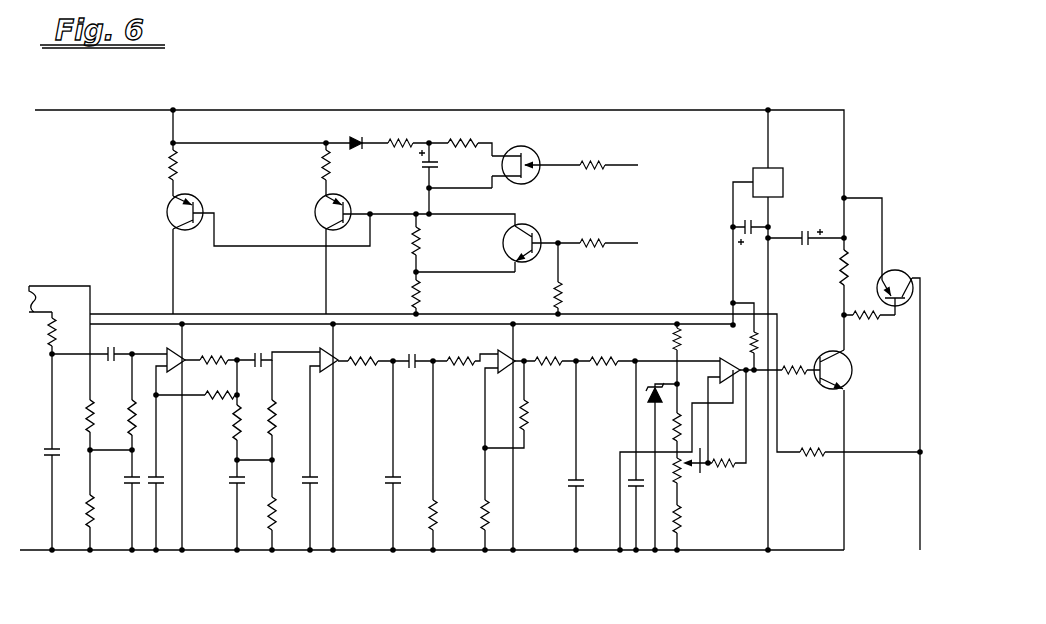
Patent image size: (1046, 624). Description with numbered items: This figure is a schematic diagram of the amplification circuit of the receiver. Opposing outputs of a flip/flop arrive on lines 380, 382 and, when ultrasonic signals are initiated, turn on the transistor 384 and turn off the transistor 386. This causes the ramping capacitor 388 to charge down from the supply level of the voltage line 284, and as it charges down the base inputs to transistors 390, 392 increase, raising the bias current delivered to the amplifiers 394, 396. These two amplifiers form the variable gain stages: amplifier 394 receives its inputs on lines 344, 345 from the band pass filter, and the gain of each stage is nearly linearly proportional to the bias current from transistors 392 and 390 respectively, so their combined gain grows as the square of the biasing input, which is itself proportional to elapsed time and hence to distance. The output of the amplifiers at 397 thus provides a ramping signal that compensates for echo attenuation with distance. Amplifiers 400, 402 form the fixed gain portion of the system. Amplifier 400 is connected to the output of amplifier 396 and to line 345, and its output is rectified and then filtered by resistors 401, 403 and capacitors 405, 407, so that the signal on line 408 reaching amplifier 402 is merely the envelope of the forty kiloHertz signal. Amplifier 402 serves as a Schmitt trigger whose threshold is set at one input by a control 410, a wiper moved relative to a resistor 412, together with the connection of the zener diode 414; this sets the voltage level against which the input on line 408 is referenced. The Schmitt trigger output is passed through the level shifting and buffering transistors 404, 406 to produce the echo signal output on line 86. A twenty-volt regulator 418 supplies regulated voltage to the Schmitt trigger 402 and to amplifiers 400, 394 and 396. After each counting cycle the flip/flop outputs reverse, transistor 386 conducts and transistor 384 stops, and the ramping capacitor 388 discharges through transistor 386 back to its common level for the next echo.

The voltage line 284 is at (125, 110).
The line 344 is at (59, 300).
The line 345 is at (38, 551).
The line 380 is at (620, 244).
The line 382 is at (628, 166).
The transistor 384 is at (530, 228).
The transistor 386 is at (534, 151).
The ramping capacitor 388 is at (422, 170).
The transistor 390 is at (318, 226).
The transistor 392 is at (166, 204).
The amplifier 394 is at (165, 349).
The amplifier 396 is at (318, 349).
The output of amplifiers 397 is at (344, 360).
The amplifier 400 is at (503, 350).
The resistor 401 is at (548, 360).
The amplifier 402 is at (727, 358).
The resistor 403 is at (618, 362).
The transistor 404 is at (850, 363).
The capacitor 405 is at (575, 488).
The transistor 406 is at (900, 270).
The capacitor 407 is at (630, 488).
The line 408 is at (668, 364).
The control 410 is at (700, 476).
The resistor 412 is at (680, 488).
The zener diode 414 is at (648, 402).
The 20-volt regulator 418 is at (768, 182).
The line 86 is at (918, 548).